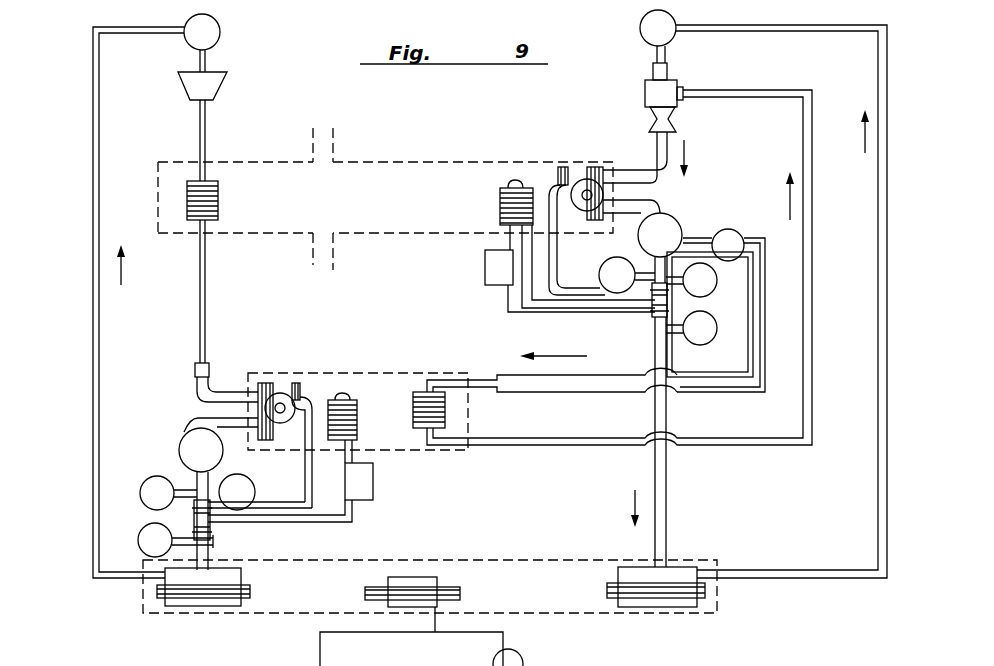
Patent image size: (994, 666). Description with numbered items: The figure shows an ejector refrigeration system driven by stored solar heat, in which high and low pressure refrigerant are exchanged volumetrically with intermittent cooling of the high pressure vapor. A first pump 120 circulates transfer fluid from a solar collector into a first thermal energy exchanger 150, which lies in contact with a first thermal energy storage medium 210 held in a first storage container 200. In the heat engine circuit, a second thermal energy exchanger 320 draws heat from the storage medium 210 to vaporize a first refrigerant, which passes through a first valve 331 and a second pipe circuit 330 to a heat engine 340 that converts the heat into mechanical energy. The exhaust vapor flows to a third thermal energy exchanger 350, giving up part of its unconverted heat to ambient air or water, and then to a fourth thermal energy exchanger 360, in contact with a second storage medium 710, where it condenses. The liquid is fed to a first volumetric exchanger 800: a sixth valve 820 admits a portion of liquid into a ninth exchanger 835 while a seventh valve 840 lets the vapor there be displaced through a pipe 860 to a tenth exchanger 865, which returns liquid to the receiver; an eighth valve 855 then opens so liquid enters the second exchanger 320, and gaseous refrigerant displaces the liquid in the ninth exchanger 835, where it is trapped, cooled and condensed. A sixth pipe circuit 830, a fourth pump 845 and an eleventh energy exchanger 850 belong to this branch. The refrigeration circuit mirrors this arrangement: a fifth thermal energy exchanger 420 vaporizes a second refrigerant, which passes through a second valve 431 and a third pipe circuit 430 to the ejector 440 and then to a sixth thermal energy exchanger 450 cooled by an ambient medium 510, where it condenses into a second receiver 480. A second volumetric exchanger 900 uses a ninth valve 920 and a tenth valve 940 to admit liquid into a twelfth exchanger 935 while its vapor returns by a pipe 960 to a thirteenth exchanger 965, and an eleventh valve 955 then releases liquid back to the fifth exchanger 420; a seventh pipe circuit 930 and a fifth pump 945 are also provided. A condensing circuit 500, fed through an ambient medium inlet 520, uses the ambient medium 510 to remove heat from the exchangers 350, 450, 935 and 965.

The first pump 120 is at (568, 665).
The first thermal energy exchanger 150 is at (365, 593).
The first thermal energy storage container 200 is at (682, 613).
The first thermal energy storage medium 210 is at (512, 573).
The second thermal energy exchanger 320 is at (177, 606).
The second pipe circuit 330 is at (99, 340).
The first valve 331 is at (219, 29).
The heat engine 340 is at (223, 90).
The third thermal energy exchanger 350 is at (187, 208).
The fourth thermal energy exchanger 360 is at (266, 383).
The fifth thermal energy exchanger 420 is at (703, 590).
The third pipe circuit 430 is at (667, 505).
The second valve 431 is at (640, 33).
The ejector 440 is at (645, 88).
The sixth thermal energy exchanger 450 is at (593, 167).
The second receiver 480 is at (680, 215).
The condensing circuit 500 is at (270, 168).
The ambient medium 510 is at (170, 173).
The ambient medium inlet 520 is at (325, 270).
The second thermal energy storage medium 710 is at (394, 447).
The first volumetric exchanger 800 is at (209, 528).
The sixth valve 820 is at (181, 483).
The sixth pipe circuit 830 is at (305, 485).
The ninth energy exchanger 835 is at (197, 505).
The seventh valve 840 is at (143, 552).
The fourth pump 845 is at (373, 493).
The eleventh energy exchanger 850 is at (360, 404).
The eighth valve 855 is at (294, 523).
The pipe 860 is at (313, 511).
The tenth energy exchanger 865 is at (296, 382).
The second volumetric exchanger 900 is at (650, 317).
The ninth valve 920 is at (718, 280).
The seventh pipe circuit 930 is at (582, 313).
The twelfth energy exchanger 935 is at (677, 343).
The tenth valve 940 is at (713, 312).
The fifth pump 945 is at (485, 262).
The eleventh valve 955 is at (605, 268).
The pipe 960 is at (548, 187).
The thirteenth energy exchanger 965 is at (563, 167).